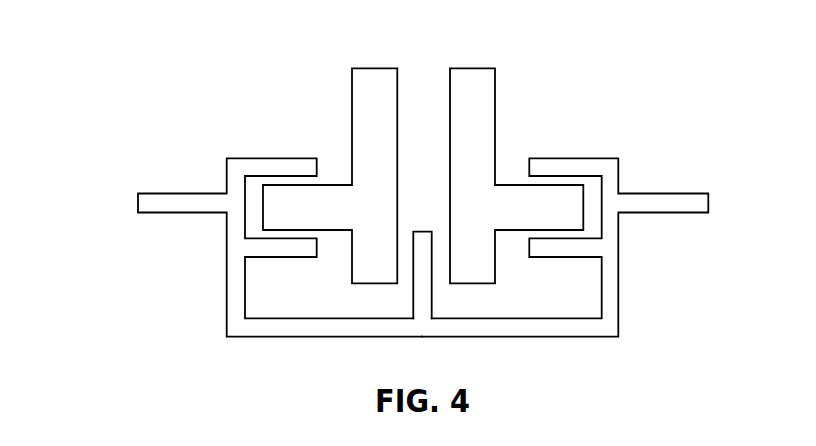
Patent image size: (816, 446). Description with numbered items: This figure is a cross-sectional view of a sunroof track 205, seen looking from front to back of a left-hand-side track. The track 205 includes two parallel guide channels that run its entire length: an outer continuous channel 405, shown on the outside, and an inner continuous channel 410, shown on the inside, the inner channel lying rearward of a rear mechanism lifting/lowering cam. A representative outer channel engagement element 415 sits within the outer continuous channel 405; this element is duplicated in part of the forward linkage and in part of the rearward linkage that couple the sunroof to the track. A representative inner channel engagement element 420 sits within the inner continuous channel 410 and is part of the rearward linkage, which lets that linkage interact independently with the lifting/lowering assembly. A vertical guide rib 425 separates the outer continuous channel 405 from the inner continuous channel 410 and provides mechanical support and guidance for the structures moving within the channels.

The sunroof track 205 is at (653, 64).
The outer continuous channel 405 is at (254, 193).
The inner continuous channel 410 is at (592, 195).
The outer channel engagement element 415 is at (352, 104).
The inner channel engagement element 420 is at (496, 104).
The vertical guide rib 425 is at (422, 293).